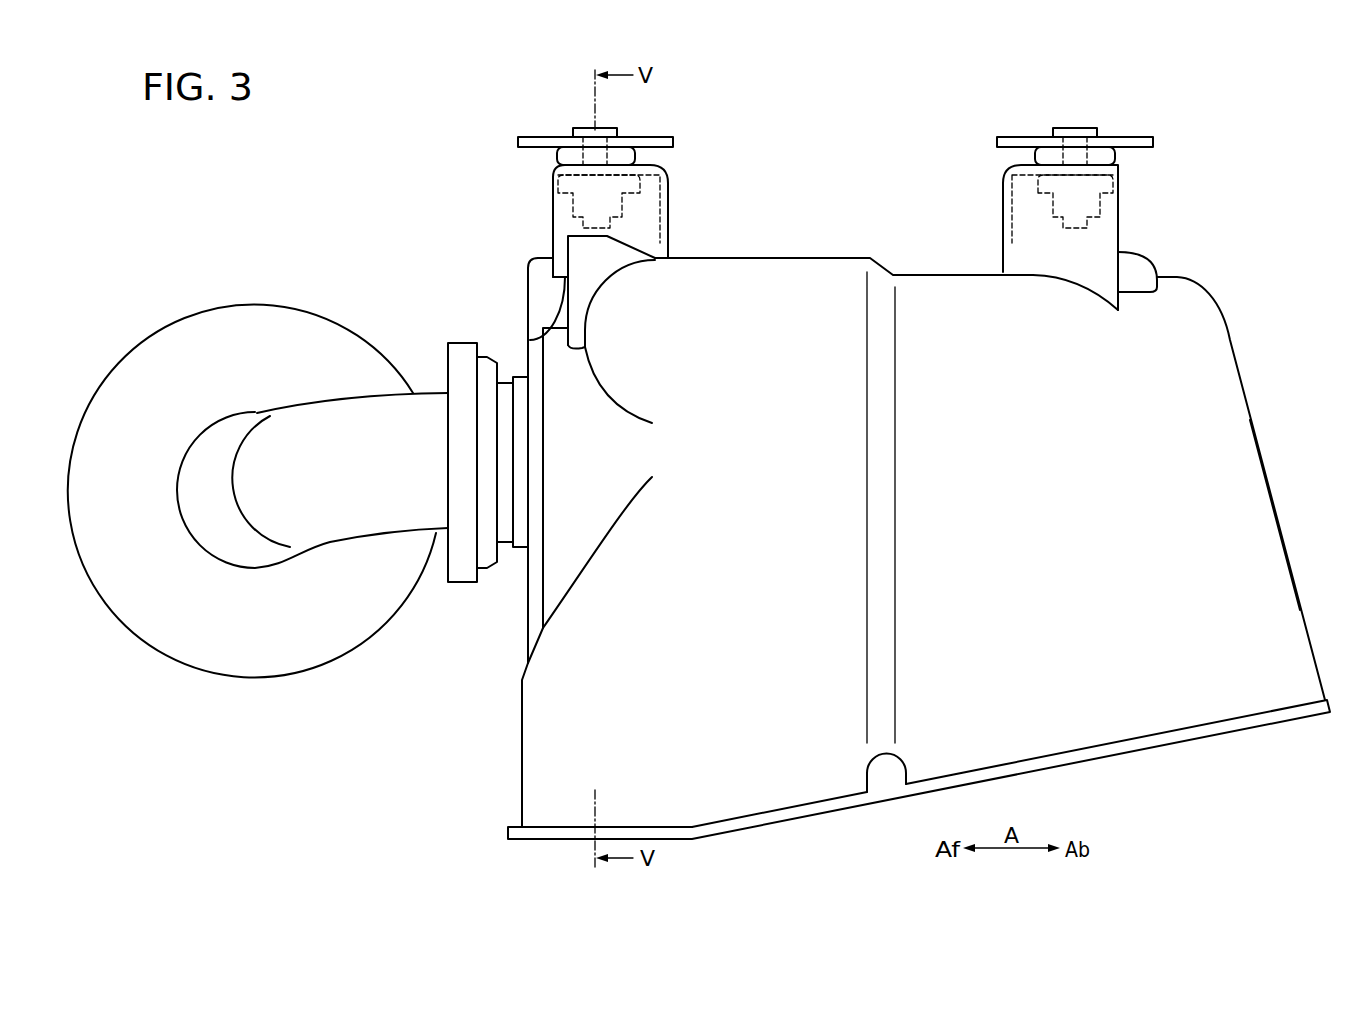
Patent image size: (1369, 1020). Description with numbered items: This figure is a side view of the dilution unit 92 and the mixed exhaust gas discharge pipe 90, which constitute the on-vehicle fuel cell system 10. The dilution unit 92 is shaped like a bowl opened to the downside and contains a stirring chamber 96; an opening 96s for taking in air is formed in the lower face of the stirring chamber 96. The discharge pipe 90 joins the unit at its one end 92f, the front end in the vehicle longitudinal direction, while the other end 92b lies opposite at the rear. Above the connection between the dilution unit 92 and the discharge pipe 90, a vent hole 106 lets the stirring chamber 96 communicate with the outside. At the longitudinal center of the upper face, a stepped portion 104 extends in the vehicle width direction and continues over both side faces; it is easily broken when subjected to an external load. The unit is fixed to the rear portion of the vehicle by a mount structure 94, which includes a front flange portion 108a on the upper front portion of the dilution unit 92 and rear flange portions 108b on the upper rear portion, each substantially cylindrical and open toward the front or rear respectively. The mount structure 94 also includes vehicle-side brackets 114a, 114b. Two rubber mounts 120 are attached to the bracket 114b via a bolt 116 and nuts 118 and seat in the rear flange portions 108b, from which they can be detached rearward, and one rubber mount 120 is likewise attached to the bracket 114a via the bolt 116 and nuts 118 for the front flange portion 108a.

The vehicle body frame structure 10 is at (412, 132).
The mixed exhaust gas discharge pipe 90 is at (333, 427).
The dilution unit 92 is at (1118, 762).
The one end of the dilution unit 92f is at (522, 708).
The other end of the dilution unit 92b is at (1267, 470).
The mount structure 94 is at (1123, 120).
The stirring chamber 96 is at (585, 725).
The opening 96s is at (797, 812).
The stepped portion 104 is at (885, 318).
The vent hole 106 is at (587, 268).
The front flange portion 108a is at (640, 208).
The rear flange portion 108b is at (1028, 203).
The bracket 114a is at (537, 140).
The bracket 114b is at (1015, 140).
The bolt 116 is at (610, 127).
The nut 118 is at (553, 205).
The rubber mount 120 is at (557, 157).